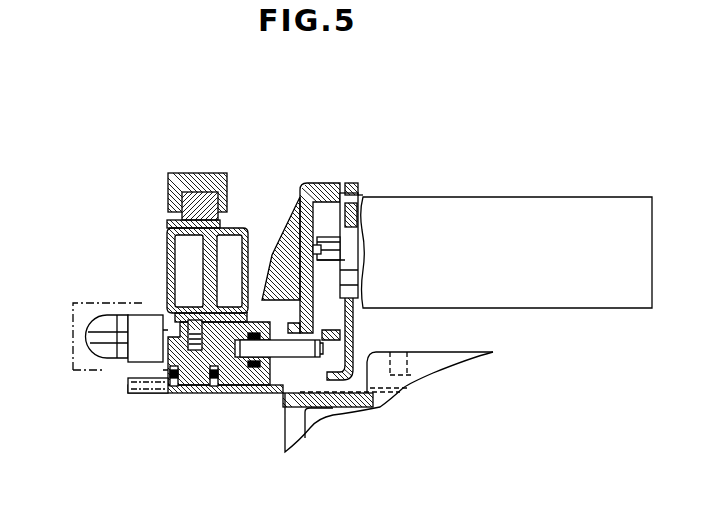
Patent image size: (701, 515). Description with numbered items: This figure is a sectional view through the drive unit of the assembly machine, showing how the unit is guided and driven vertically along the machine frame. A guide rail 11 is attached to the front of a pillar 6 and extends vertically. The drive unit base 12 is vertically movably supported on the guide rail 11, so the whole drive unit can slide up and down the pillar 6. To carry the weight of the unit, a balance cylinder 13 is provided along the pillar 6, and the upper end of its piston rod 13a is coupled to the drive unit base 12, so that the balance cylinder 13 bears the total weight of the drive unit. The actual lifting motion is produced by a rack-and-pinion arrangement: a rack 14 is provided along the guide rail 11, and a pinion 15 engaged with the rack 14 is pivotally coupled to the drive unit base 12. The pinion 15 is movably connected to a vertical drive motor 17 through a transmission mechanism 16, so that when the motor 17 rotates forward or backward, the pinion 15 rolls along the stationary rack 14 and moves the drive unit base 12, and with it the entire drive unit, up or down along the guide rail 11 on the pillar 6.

The pillar 6 is at (168, 258).
The guide rail 11 is at (177, 333).
The drive unit base 12 is at (293, 420).
The balance cylinder 13 is at (72, 366).
The piston rod 13a is at (104, 340).
The rack 14 is at (236, 303).
The pinion 15 is at (232, 394).
The transmission mechanism 16 is at (258, 320).
The vertical drive motor 17 is at (432, 213).